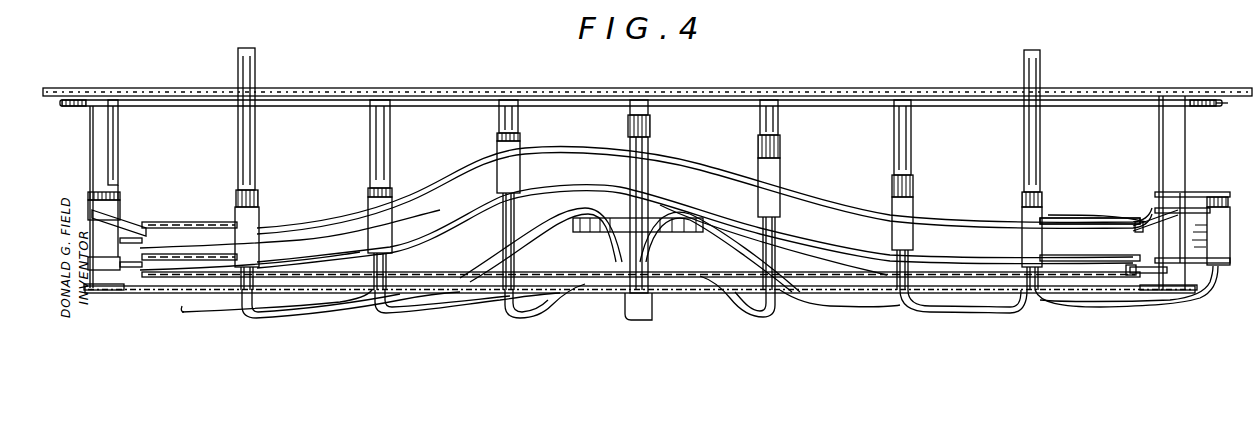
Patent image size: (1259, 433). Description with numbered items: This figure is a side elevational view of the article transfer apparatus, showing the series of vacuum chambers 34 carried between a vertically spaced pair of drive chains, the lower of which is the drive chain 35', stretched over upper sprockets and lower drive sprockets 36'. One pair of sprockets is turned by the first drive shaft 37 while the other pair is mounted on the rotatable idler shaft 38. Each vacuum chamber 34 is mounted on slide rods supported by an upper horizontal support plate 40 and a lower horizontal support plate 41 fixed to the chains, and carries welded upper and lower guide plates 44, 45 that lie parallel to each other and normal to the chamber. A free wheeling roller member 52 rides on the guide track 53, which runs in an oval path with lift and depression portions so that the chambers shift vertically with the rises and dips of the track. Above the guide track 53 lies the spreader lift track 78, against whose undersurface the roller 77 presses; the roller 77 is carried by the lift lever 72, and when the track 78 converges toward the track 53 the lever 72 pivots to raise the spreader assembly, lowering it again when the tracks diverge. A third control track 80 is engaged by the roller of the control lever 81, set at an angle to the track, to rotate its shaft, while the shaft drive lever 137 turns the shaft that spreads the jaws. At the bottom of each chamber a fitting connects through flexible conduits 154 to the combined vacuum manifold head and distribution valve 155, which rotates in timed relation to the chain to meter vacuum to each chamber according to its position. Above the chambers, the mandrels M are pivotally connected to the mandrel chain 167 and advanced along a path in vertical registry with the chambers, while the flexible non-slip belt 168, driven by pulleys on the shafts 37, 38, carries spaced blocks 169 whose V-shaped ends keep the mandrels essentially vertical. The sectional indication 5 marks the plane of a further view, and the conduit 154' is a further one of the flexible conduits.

The mandrel chain 167 is at (78, 80).
The flexible non-slip belt 168 is at (1193, 107).
The spaced blocks 169 is at (1222, 104).
The first drive shaft 37 is at (257, 63).
The rotatable idler shaft 38 is at (1040, 58).
The vacuum chamber 34 is at (233, 213).
The mandrel M is at (116, 126).
The third control track 80 is at (312, 272).
The control lever 81 is at (136, 243).
The lower drive sprocket 36' is at (590, 275).
The shaft drive lever 137 is at (150, 290).
The hose 154' is at (351, 307).
The lower drive chain 35' is at (480, 305).
The section line 5- 5 is at (637, 62).
The guide track 53 is at (710, 196).
The combined vacuum manifold head and distribution valve 155 is at (664, 235).
The spreader lift track 78 is at (850, 192).
The flexible conduits 154 is at (863, 300).
The upper horizontal support plate 40 is at (1193, 193).
The lift lever 72 is at (1145, 214).
The upper guide plate 44 is at (1172, 206).
The roller 77 is at (1132, 228).
The free wheeling roller member 52 is at (1147, 236).
The lower horizontal support plate 41 is at (1175, 286).
The lower guide plate 45 is at (1214, 293).